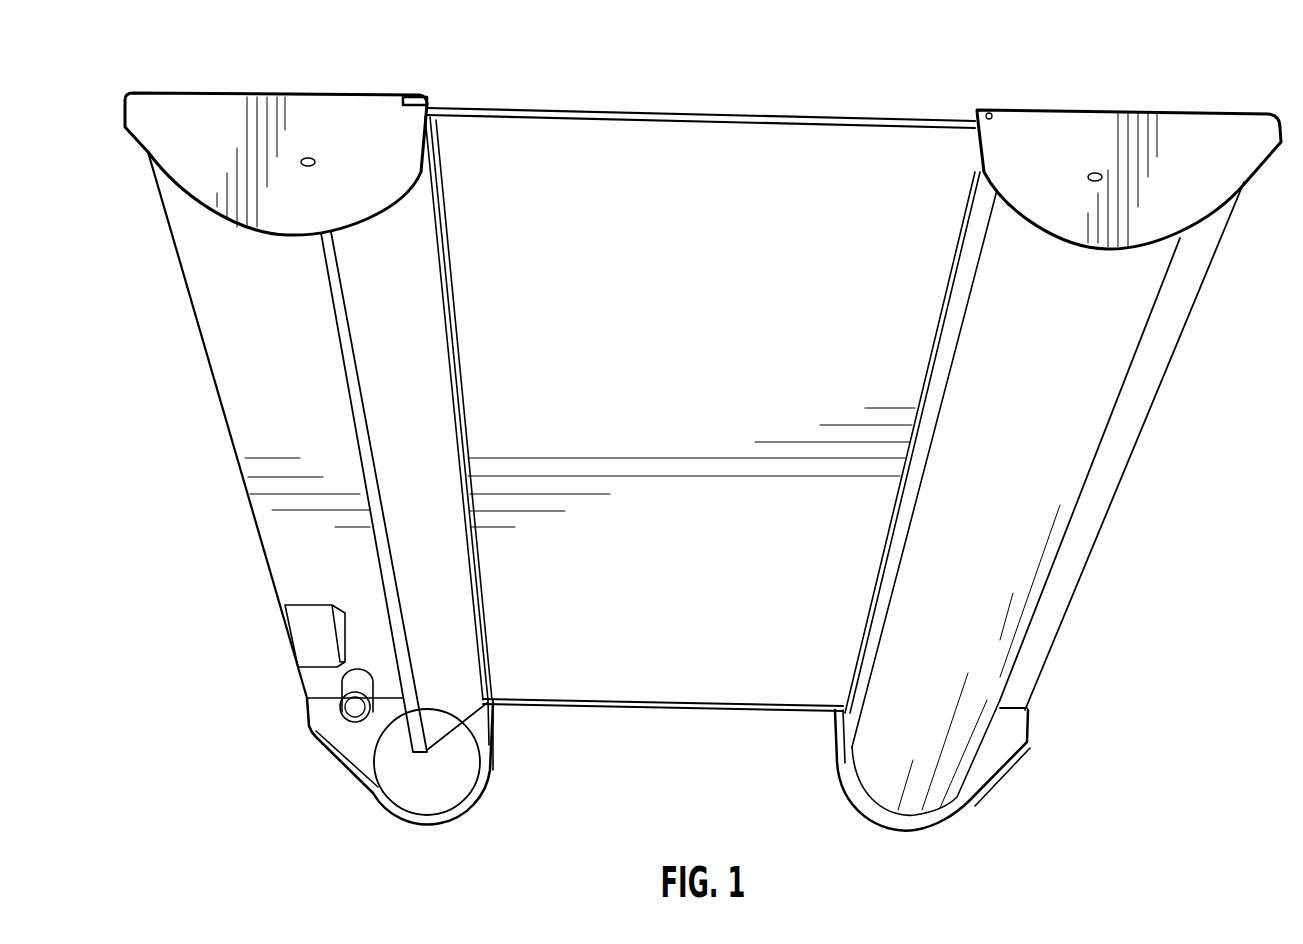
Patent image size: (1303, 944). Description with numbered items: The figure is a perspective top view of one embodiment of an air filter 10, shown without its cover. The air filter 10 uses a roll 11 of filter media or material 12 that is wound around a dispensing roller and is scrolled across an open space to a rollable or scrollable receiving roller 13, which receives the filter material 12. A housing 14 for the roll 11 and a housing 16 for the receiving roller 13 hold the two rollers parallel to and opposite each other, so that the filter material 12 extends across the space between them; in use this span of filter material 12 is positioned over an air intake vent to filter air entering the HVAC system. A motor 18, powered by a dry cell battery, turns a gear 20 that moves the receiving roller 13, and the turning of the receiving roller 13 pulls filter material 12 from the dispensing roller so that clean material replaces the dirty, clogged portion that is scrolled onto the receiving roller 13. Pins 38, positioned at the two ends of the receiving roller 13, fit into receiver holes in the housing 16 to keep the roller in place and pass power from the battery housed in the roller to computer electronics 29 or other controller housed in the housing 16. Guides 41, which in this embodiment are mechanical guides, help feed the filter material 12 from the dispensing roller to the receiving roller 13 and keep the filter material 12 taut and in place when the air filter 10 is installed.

The air filter 10 is at (818, 36).
The roll 11 is at (1062, 523).
The filter media or material 12 is at (540, 108).
The receiving roller 13 is at (362, 507).
The housing 14 is at (1222, 113).
The housing 16 is at (197, 92).
The motor 18 is at (347, 730).
The gear 20 is at (410, 793).
The computer electronics 29 is at (310, 633).
The pins 38 is at (312, 158).
The guides 41 is at (417, 97).